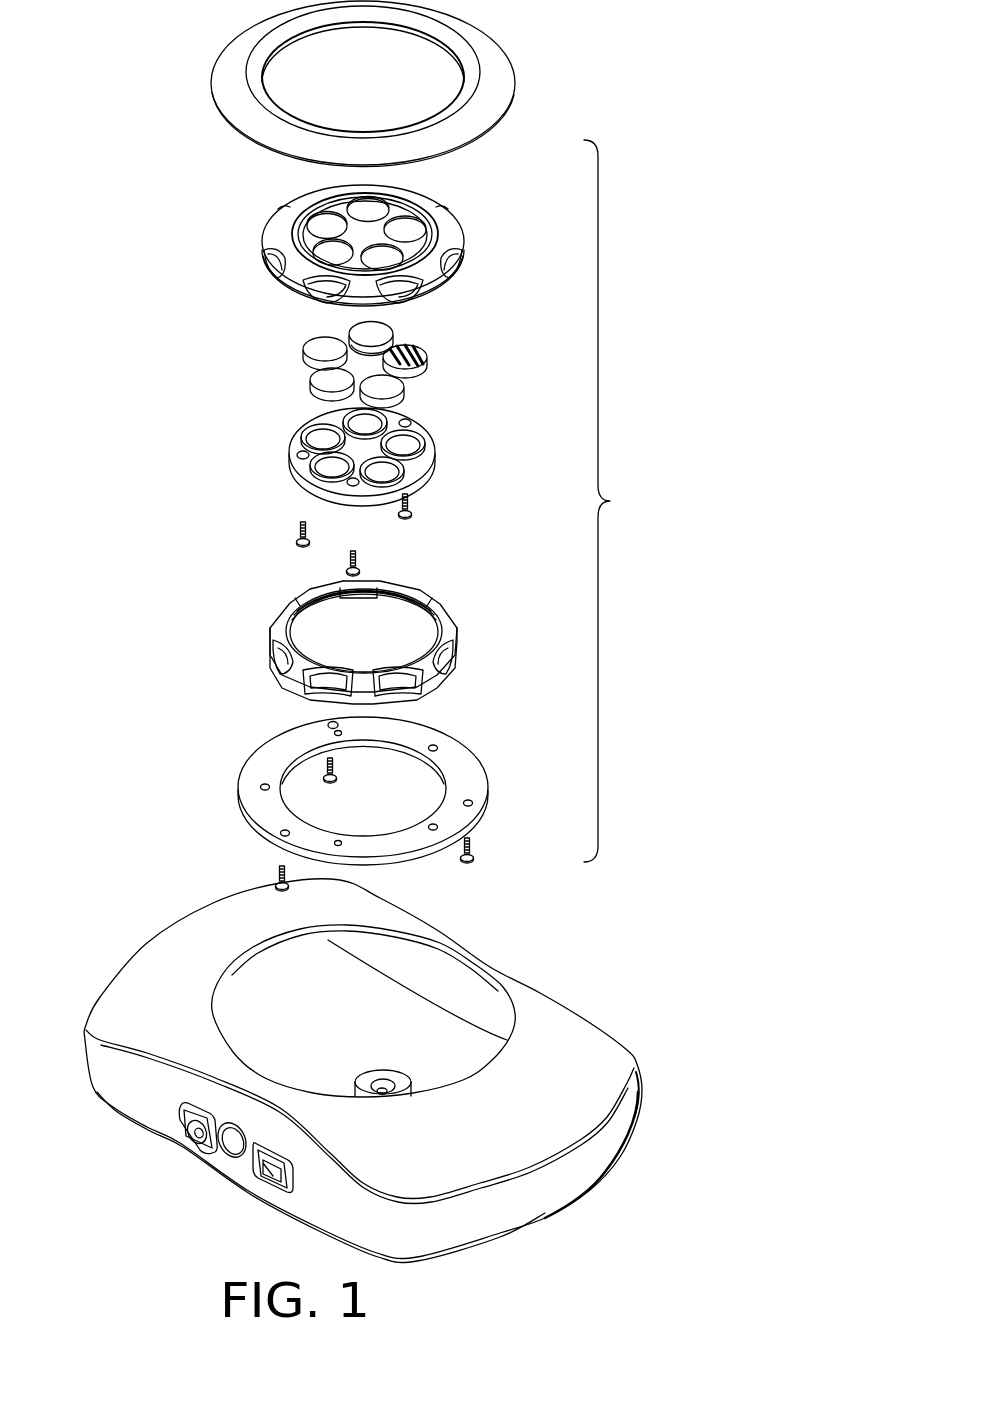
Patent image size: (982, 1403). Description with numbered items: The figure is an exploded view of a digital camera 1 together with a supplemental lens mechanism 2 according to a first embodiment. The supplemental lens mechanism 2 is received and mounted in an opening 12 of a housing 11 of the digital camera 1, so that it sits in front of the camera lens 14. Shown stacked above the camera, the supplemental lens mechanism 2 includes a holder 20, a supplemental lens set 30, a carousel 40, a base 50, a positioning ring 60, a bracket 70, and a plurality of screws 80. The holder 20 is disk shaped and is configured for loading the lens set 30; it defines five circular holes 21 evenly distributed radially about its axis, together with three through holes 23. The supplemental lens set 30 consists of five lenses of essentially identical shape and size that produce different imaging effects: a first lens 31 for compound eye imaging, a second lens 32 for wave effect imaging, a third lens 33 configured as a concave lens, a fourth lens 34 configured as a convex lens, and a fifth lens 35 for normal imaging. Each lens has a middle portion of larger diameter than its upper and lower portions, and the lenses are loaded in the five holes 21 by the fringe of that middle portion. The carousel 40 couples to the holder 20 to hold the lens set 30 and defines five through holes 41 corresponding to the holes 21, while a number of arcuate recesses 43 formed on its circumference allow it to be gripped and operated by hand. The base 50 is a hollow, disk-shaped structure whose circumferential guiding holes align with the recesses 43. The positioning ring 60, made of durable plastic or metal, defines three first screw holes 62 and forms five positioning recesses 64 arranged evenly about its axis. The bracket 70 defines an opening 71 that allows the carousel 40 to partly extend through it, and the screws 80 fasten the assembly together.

The digital camera 1 is at (408, 1071).
The supplemental lens mechanism 2 is at (610, 501).
The housing 11 is at (580, 1068).
The opening 12 is at (470, 1000).
The camera lens 14 is at (402, 1086).
The holder 20 is at (402, 446).
The circular holes 21 is at (317, 442).
The through holes 23 is at (408, 420).
The supplemental lens set 30 is at (403, 346).
The first lens 31 is at (362, 332).
The second lens 32 is at (408, 353).
The third lens 33 is at (400, 385).
The fourth lens 34 is at (317, 381).
The fifth lens 35 is at (313, 353).
The carousel 40 is at (375, 241).
The through holes 41 is at (322, 227).
The recesses 43 is at (275, 265).
The base 50 is at (450, 625).
The positioning ring 60 is at (404, 773).
The first screw holes 62 is at (472, 802).
The positioning recesses 64 is at (436, 745).
The bracket 70 is at (345, 92).
The opening 71 is at (290, 82).
The screws 80 is at (413, 503).